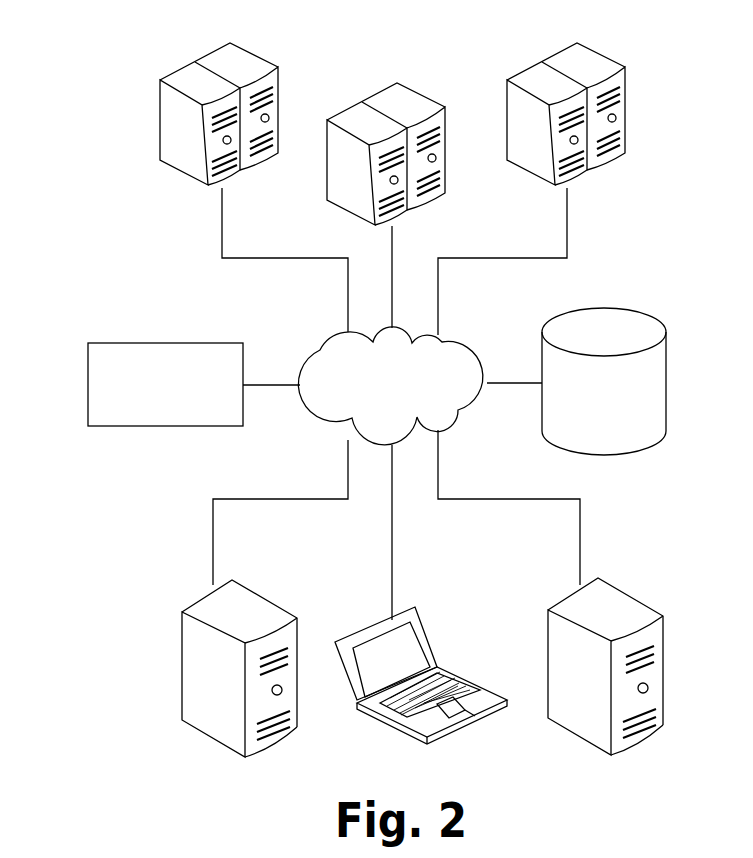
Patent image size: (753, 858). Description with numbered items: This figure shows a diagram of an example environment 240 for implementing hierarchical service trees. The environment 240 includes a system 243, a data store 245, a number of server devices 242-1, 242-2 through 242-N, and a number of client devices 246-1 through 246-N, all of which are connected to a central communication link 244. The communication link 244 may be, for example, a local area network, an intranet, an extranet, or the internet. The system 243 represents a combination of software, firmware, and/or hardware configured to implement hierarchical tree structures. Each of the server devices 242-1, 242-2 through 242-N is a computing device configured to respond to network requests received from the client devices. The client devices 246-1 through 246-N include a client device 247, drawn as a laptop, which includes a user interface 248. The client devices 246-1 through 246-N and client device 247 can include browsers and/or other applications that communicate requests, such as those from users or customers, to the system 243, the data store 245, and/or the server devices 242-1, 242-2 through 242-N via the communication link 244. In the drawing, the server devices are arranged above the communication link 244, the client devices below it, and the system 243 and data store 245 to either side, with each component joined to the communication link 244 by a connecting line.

The environment 240 is at (140, 36).
The server device 242-1 is at (258, 52).
The server device 242-2 is at (433, 95).
The server device 242-N is at (603, 53).
The system 243 is at (173, 343).
The communication link 244 is at (467, 345).
The data store 245 is at (618, 308).
The client device 246-1 is at (258, 595).
The client device 246-N is at (620, 593).
The client device 247 is at (427, 641).
The user interface 248 is at (357, 658).